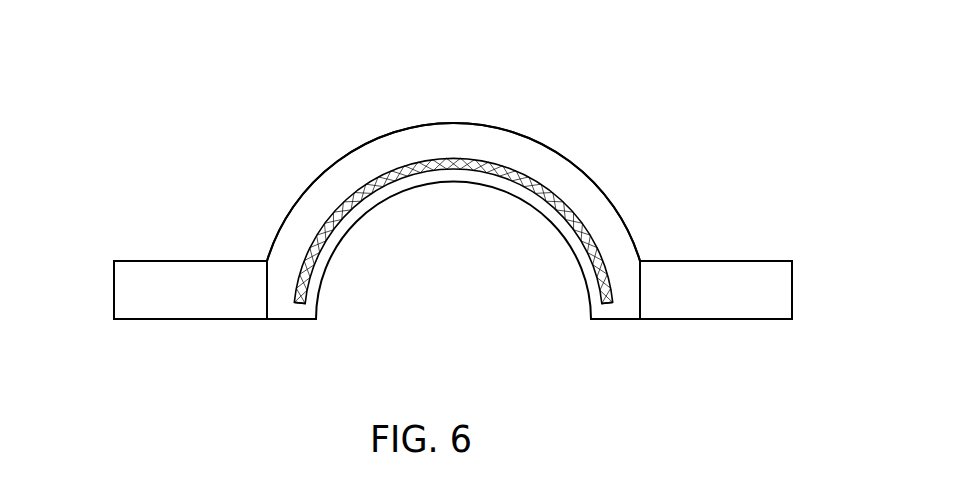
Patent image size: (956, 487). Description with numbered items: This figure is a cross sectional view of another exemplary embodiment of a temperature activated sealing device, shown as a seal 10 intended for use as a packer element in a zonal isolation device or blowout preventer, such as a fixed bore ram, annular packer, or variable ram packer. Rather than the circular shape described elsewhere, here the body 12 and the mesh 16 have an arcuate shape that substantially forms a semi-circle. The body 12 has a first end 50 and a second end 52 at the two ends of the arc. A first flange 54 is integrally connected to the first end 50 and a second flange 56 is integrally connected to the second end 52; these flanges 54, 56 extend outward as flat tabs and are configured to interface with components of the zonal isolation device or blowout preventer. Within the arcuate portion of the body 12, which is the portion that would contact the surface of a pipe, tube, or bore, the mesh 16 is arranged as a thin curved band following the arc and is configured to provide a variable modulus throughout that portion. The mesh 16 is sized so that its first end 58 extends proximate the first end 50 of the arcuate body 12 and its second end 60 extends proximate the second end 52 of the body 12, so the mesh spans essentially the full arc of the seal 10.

The seal 10 is at (190, 85).
The body 12 is at (520, 133).
The mesh 16 is at (343, 182).
The first end 50 is at (190, 336).
The second end 52 is at (717, 336).
The first flange 54 is at (150, 261).
The second flange 56 is at (713, 261).
The first end of the mesh 58 is at (293, 306).
The second end of the mesh 60 is at (612, 306).